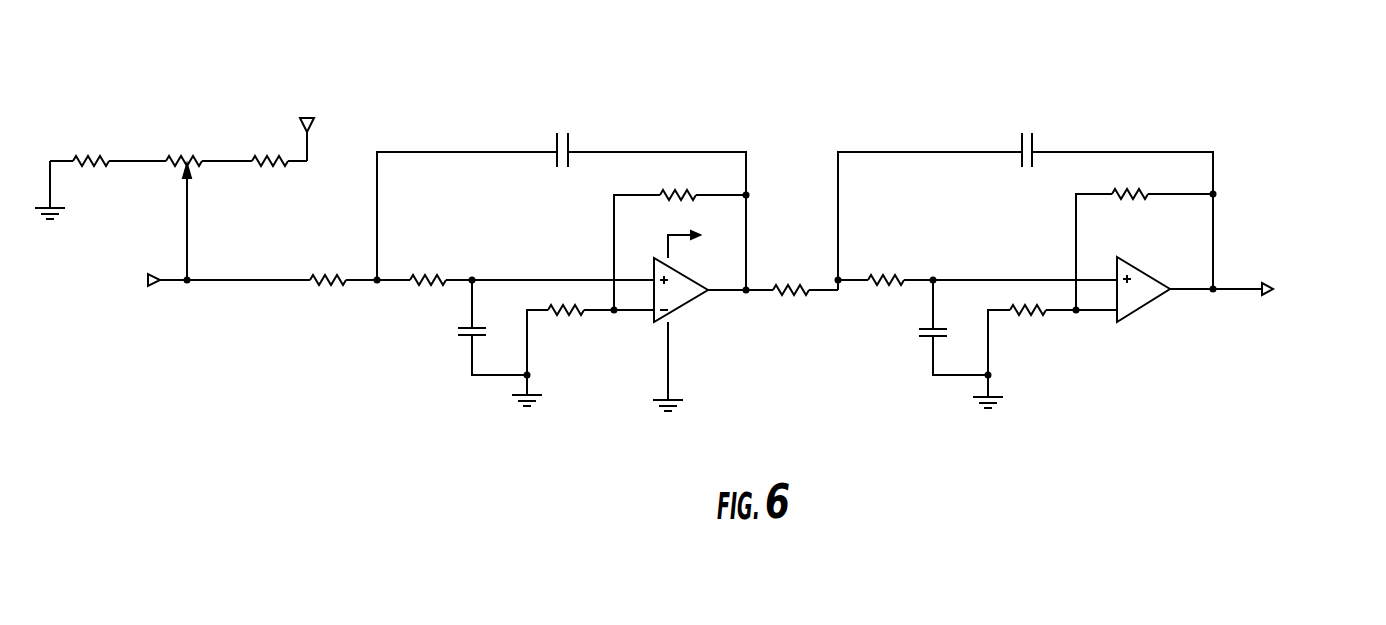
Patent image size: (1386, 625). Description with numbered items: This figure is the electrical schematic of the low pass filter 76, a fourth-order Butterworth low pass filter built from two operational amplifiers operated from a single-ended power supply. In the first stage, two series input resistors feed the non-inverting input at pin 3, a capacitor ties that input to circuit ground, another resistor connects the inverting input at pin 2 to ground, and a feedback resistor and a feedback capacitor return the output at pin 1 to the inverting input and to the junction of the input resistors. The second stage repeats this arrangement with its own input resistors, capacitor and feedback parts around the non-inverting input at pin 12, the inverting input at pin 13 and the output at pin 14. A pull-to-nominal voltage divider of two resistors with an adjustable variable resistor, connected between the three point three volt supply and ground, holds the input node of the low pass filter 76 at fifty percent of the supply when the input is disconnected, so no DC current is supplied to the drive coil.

The low pass filter 76 is at (697, 302).
The op-amp U2:A output pin 1 is at (727, 279).
The op-amp U2:A inverting input pin 2 is at (644, 301).
The op-amp U2:A non-inverting input pin 3 is at (644, 266).
The op-amp U2:D non-inverting input pin 12 is at (1101, 270).
The op-amp U2:D inverting input pin 13 is at (1101, 302).
The op-amp U2:D output pin 14 is at (1191, 278).